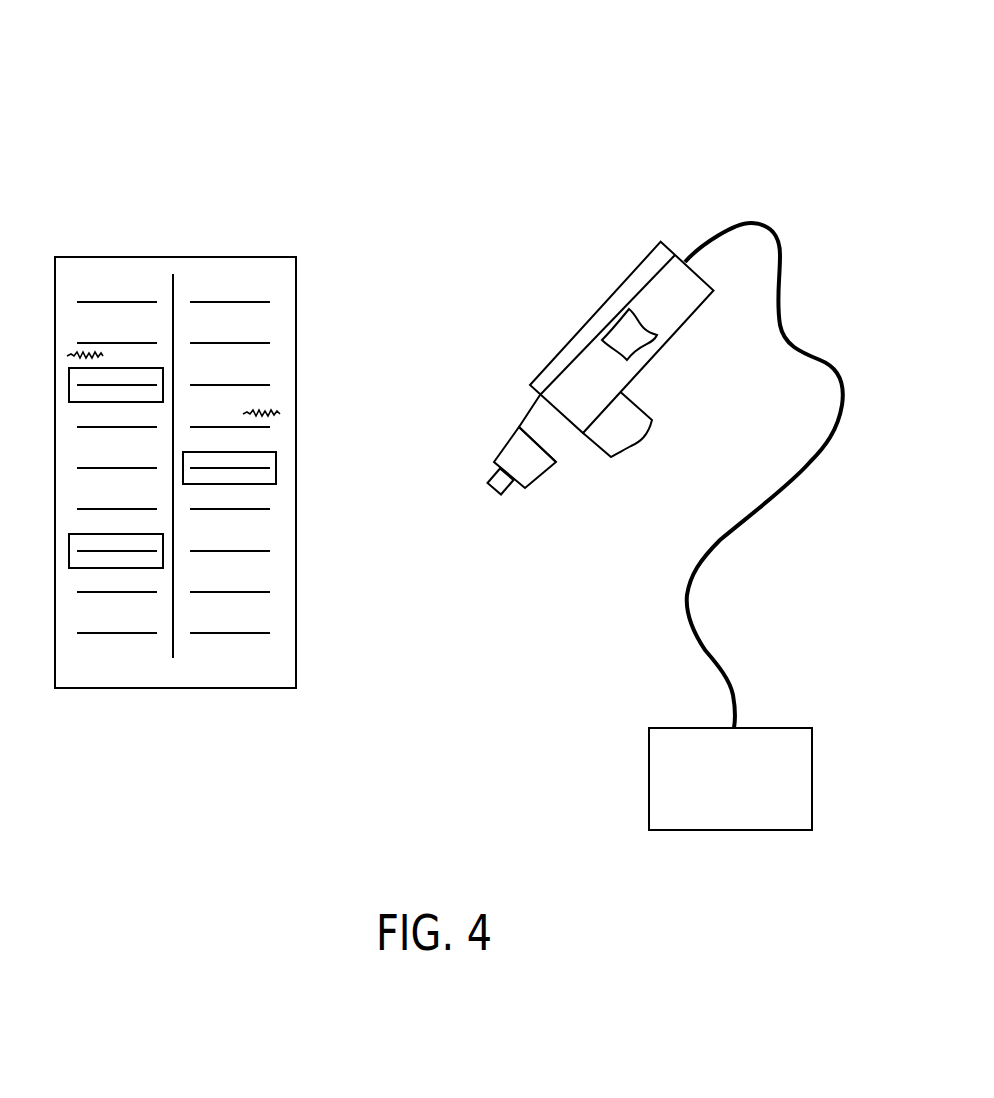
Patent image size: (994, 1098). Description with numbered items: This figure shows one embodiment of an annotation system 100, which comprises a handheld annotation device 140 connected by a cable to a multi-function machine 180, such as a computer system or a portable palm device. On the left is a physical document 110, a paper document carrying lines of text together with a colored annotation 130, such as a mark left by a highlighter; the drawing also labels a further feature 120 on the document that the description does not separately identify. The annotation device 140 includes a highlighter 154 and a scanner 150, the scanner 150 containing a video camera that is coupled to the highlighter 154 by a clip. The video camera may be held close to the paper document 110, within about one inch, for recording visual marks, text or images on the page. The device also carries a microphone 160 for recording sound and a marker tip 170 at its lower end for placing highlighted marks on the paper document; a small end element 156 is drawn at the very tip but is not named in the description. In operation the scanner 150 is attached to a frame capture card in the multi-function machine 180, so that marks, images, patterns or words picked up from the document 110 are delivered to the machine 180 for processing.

The annotation system 100 is at (483, 130).
The physical document 110 is at (218, 257).
The handwritten annotation 120 is at (272, 410).
The colored annotation 130 is at (275, 453).
The annotation device 140 is at (797, 207).
The scanner 150 is at (594, 317).
The highlighter 154 is at (673, 335).
The scanning tip 156 is at (498, 497).
The microphone 160 is at (647, 415).
The marker tip 170 is at (542, 473).
The multi-function machine 180 is at (712, 793).